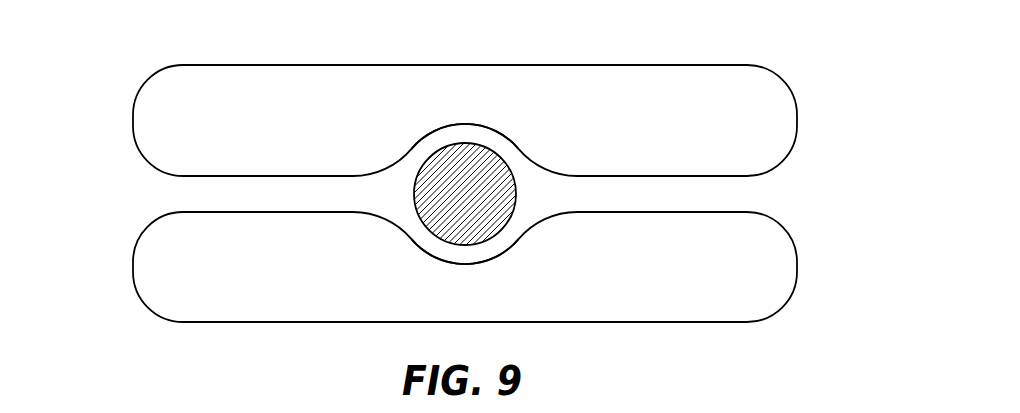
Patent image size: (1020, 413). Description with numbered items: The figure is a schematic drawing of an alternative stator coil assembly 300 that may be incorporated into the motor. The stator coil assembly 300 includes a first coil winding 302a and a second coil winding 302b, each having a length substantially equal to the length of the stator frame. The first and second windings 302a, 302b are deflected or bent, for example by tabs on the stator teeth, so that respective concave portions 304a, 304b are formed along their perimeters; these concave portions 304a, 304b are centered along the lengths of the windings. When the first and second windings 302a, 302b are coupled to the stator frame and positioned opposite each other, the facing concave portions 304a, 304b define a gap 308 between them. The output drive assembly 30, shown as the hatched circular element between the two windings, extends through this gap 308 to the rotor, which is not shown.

The stator coil assembly 300 is at (100, 130).
The output drive assembly 30 is at (417, 163).
The first coil winding 302a is at (775, 108).
The second coil winding 302b is at (772, 277).
The concave portion 304a is at (499, 124).
The concave portion 304b is at (499, 264).
The gap 308 is at (396, 198).